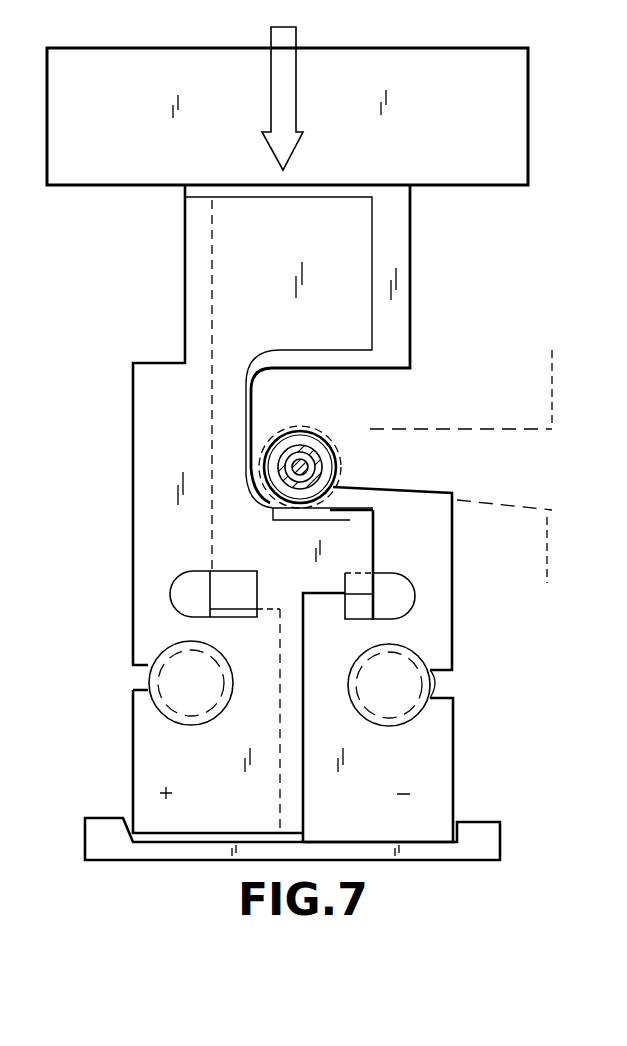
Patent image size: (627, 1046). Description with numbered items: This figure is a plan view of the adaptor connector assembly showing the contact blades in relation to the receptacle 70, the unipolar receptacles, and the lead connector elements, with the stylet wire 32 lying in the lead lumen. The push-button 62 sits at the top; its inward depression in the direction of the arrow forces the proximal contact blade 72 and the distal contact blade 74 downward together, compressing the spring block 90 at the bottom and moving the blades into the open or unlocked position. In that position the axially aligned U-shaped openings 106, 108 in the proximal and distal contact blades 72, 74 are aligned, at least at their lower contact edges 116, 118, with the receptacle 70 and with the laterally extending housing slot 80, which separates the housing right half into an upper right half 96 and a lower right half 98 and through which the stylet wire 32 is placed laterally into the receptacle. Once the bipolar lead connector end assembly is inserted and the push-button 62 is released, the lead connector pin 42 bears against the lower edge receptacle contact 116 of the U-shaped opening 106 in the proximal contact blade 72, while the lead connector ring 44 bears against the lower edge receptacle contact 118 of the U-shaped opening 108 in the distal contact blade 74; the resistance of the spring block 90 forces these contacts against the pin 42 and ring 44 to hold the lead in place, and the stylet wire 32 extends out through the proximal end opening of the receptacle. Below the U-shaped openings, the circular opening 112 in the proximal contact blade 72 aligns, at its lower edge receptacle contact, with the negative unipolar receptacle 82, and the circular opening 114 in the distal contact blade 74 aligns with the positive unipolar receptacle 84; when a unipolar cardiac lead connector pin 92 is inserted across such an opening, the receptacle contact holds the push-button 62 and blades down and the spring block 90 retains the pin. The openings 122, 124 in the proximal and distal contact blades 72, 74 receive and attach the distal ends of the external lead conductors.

The push-button 62 is at (466, 109).
The IS-1 receptacle 70 is at (260, 440).
The U-shaped opening 106 is at (312, 402).
The U-shaped opening 108 is at (372, 402).
The lead connector ring 44 is at (333, 443).
The stylet wire 32 is at (312, 456).
The lead connector pin 42 is at (312, 473).
The lower edge receptacle contact 116 is at (425, 493).
The lower edge receptacle contact 118 is at (350, 510).
The distal contact blade 74 is at (147, 436).
The proximal contact blade 72 is at (438, 772).
The spring block 90 is at (122, 849).
The opening 124 is at (168, 593).
The opening 122 is at (415, 598).
The circular opening 114 is at (180, 645).
The circular opening 112 is at (423, 645).
The positive unipolar receptacle 84 is at (148, 683).
The unipolar cardiac lead connector pin 92 is at (443, 684).
The negative unipolar receptacle 82 is at (453, 698).
The upper right half 96 is at (533, 387).
The housing slot 80 is at (557, 435).
The lower right half 98 is at (532, 558).